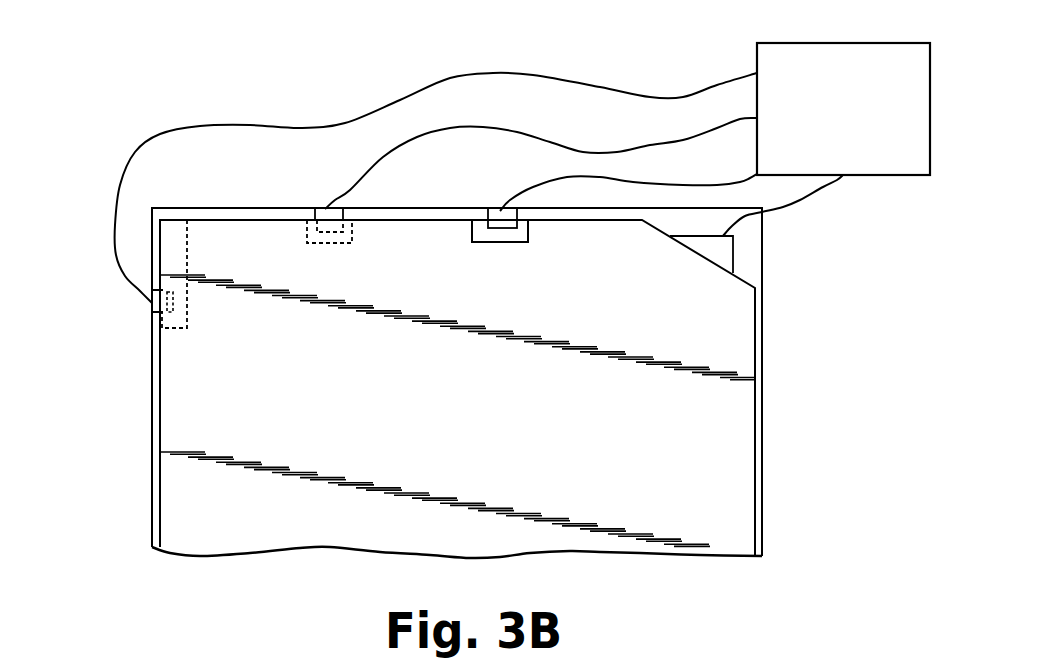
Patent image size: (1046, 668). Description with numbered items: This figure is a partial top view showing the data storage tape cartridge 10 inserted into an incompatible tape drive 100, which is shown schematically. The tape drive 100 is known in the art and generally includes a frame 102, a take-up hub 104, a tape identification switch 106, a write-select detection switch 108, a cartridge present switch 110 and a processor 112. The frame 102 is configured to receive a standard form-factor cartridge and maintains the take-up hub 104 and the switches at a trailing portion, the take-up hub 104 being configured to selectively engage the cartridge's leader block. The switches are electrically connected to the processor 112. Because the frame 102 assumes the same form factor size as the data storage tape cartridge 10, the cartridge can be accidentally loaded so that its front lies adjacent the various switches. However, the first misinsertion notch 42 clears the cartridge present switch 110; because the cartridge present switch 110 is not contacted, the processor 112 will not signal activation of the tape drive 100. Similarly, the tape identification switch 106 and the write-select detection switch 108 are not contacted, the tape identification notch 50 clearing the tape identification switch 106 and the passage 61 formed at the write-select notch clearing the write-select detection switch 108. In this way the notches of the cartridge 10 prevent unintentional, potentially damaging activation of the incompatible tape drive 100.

The data storage tape cartridge 10 is at (700, 363).
The first misinsertion notch 42 is at (512, 243).
The tape identification notch 50 is at (188, 308).
The passage 61 is at (352, 232).
The incompatible tape drive 100 is at (141, 124).
The frame 102 is at (152, 383).
The take-up hub 104 is at (718, 250).
The tape identification switch 106 is at (152, 305).
The write-select detection switch 108 is at (325, 213).
The cartridge present switch 110 is at (492, 213).
The processor 112 is at (879, 150).